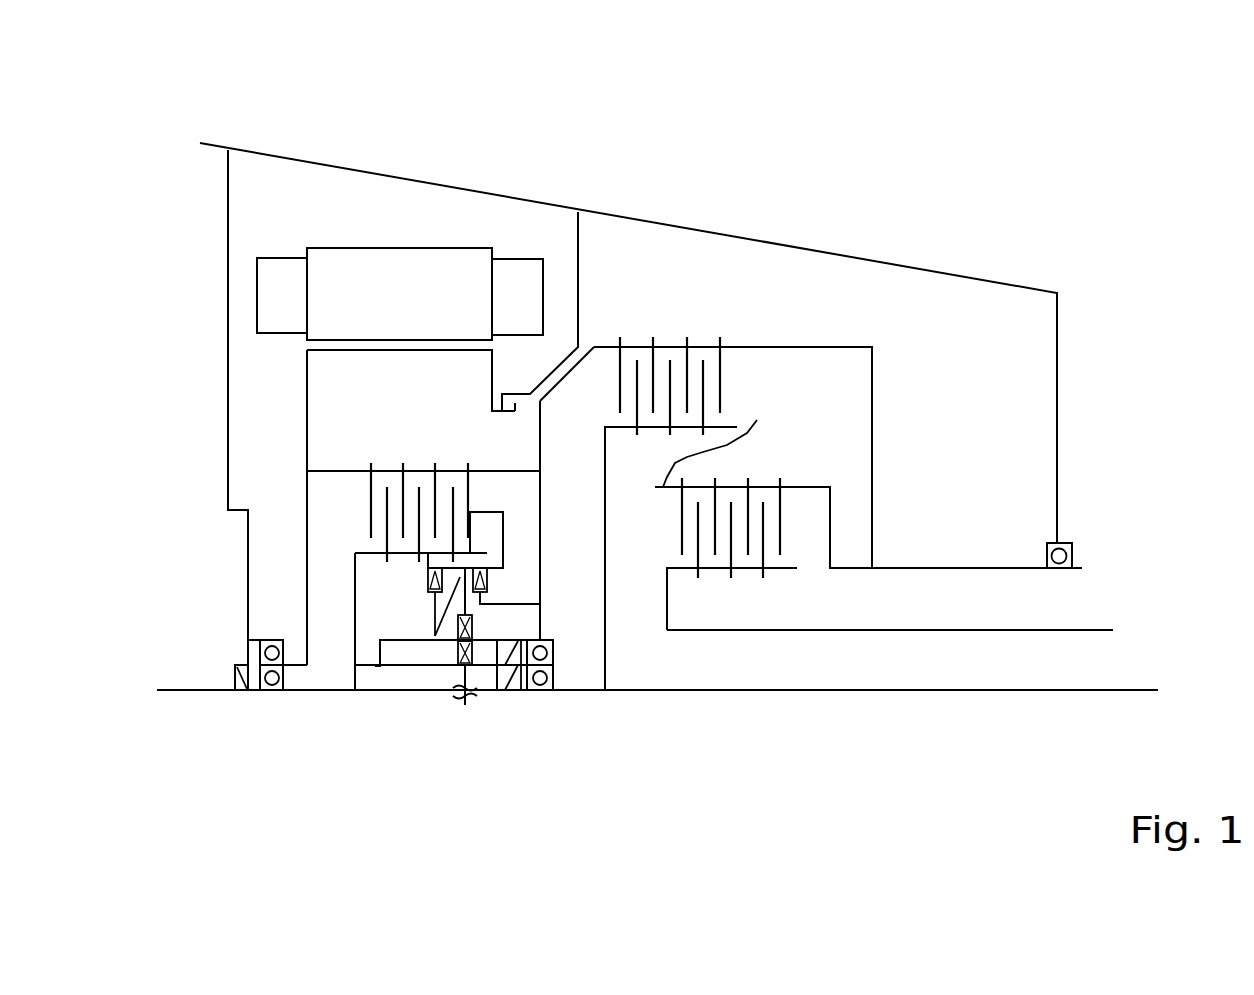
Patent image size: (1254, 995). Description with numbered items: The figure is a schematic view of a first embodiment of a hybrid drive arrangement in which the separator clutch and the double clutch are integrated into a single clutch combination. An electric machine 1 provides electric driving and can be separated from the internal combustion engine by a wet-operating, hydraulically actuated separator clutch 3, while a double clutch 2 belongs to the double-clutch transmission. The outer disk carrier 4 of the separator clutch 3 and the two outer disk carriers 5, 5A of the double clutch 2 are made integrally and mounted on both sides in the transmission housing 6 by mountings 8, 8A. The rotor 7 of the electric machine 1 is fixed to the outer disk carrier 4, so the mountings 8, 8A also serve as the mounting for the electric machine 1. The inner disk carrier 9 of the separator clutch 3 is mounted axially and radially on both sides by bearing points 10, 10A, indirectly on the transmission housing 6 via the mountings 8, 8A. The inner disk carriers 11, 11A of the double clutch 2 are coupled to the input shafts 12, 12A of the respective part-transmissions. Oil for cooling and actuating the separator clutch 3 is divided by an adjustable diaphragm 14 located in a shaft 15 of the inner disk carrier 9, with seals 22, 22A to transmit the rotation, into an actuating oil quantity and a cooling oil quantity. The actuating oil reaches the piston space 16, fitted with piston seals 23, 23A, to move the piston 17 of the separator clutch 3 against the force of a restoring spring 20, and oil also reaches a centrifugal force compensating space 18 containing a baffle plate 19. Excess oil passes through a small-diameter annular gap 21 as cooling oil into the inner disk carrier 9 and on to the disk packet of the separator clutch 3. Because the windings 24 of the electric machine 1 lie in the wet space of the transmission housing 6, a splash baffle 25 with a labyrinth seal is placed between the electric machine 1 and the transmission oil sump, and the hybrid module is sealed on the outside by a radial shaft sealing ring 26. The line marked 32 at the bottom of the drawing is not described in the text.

The electric machine 1 is at (343, 245).
The double clutch 2 is at (757, 420).
The separator clutch 3 is at (493, 347).
The outer disk carrier 4 is at (293, 451).
The outer disk carrier 5 is at (733, 311).
The outer disk carrier 5A is at (868, 316).
The transmission housing 6 is at (628, 299).
The rotor 7 is at (307, 477).
The mounting 8 is at (173, 420).
The mounting 8A is at (1140, 531).
The inner disk carrier 9 is at (318, 670).
The bearing point 10 is at (253, 714).
The bearing point 10A is at (574, 714).
The inner disk carrier 11 is at (719, 372).
The inner disk carrier 11A is at (793, 678).
The input shaft 12 is at (941, 645).
The input shaft 12A is at (957, 588).
The adjustable diaphragm 14 is at (475, 738).
The shaft 15 is at (452, 714).
The piston space 16 is at (574, 678).
The piston 17 is at (632, 650).
The centrifugal force compensating space 18 is at (425, 706).
The baffle plate 19 is at (278, 569).
The restoring spring 20 is at (263, 527).
The annular gap 21 is at (345, 750).
The seal 22 is at (442, 690).
The seal 22A is at (547, 750).
The piston seal 23 is at (514, 714).
The piston seal 23A is at (621, 678).
The windings 24 is at (400, 195).
The splash baffle 25 is at (539, 233).
The radial shaft sealing ring 26 is at (166, 645).
The axis of rotation 32 is at (386, 739).